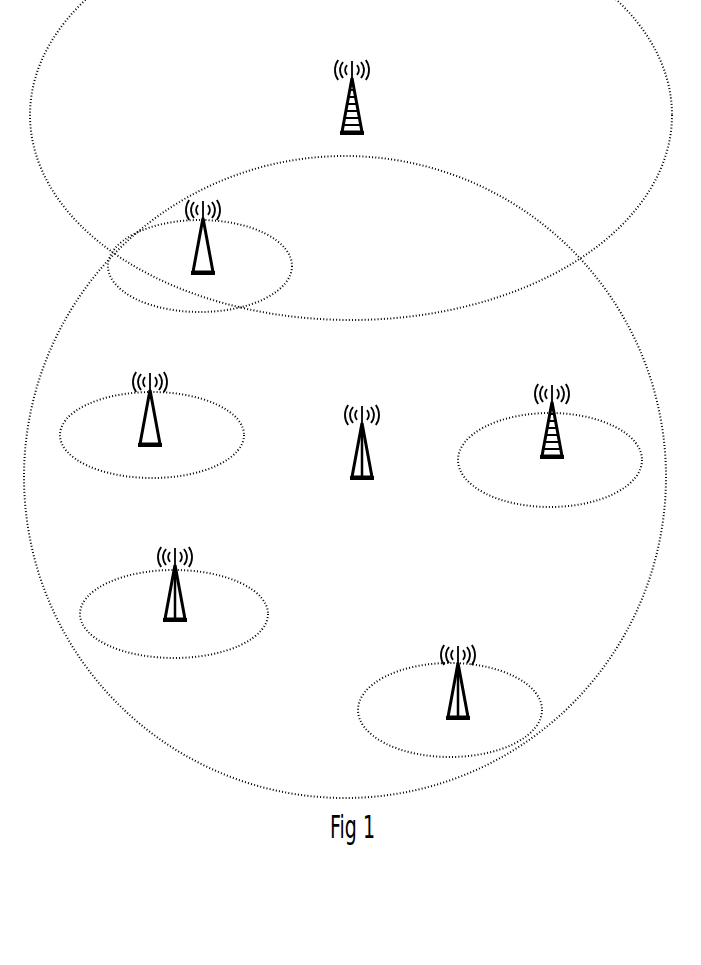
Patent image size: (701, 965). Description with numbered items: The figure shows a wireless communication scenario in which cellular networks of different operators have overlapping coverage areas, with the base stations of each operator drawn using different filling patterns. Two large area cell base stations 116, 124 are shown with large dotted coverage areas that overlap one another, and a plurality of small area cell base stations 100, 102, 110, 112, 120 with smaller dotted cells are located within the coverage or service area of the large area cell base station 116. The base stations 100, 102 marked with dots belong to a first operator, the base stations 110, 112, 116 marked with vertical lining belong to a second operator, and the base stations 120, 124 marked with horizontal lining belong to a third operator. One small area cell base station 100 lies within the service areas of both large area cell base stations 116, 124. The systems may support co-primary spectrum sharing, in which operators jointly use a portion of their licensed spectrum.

The base station 100 is at (196, 260).
The base station 102 is at (143, 432).
The base station 110 is at (451, 705).
The base station 112 is at (168, 607).
The large area cell base station 116 is at (355, 465).
The base station 120 is at (545, 444).
The large area cell base station 124 is at (345, 120).